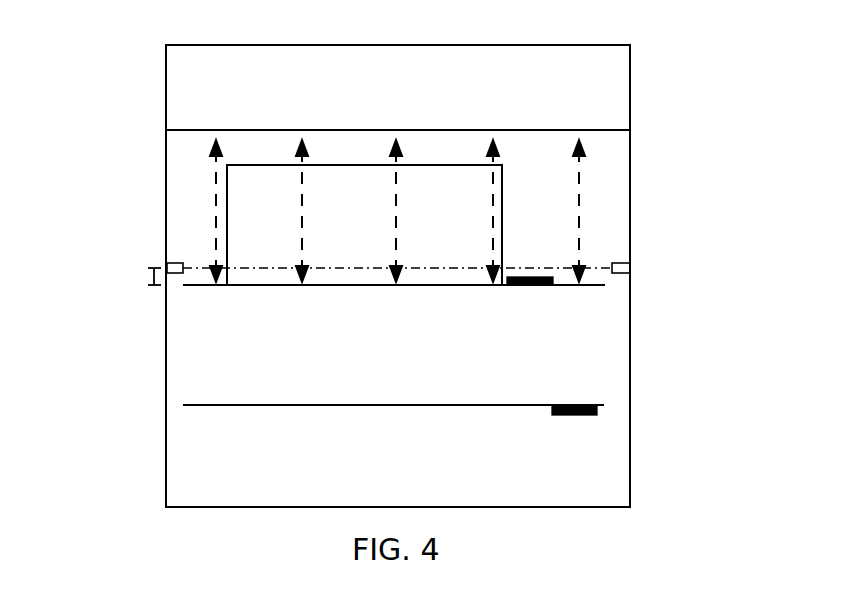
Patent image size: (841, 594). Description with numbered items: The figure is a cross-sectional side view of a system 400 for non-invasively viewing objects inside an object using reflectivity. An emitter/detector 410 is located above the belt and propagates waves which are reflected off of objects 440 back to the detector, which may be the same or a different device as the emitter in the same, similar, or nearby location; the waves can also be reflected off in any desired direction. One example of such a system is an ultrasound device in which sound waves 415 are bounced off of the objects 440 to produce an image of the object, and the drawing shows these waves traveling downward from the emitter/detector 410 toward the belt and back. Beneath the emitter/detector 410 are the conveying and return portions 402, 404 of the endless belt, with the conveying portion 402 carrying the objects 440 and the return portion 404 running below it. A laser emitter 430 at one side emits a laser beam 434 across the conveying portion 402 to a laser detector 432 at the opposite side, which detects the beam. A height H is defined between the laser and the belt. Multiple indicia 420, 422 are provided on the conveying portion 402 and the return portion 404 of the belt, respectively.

The system 400 is at (88, 134).
The emitter/detector 410 is at (417, 112).
The sound waves 415 is at (582, 181).
The objects 440 is at (237, 192).
The laser beam 434 is at (592, 268).
The laser emitter 430 is at (167, 264).
The laser detector 432 is at (630, 267).
The height H is at (148, 271).
The conveying portion of the endless belt 402 is at (200, 287).
The indicium 420 is at (540, 286).
The return portion of the endless belt 404 is at (197, 405).
The indicium 422 is at (597, 411).